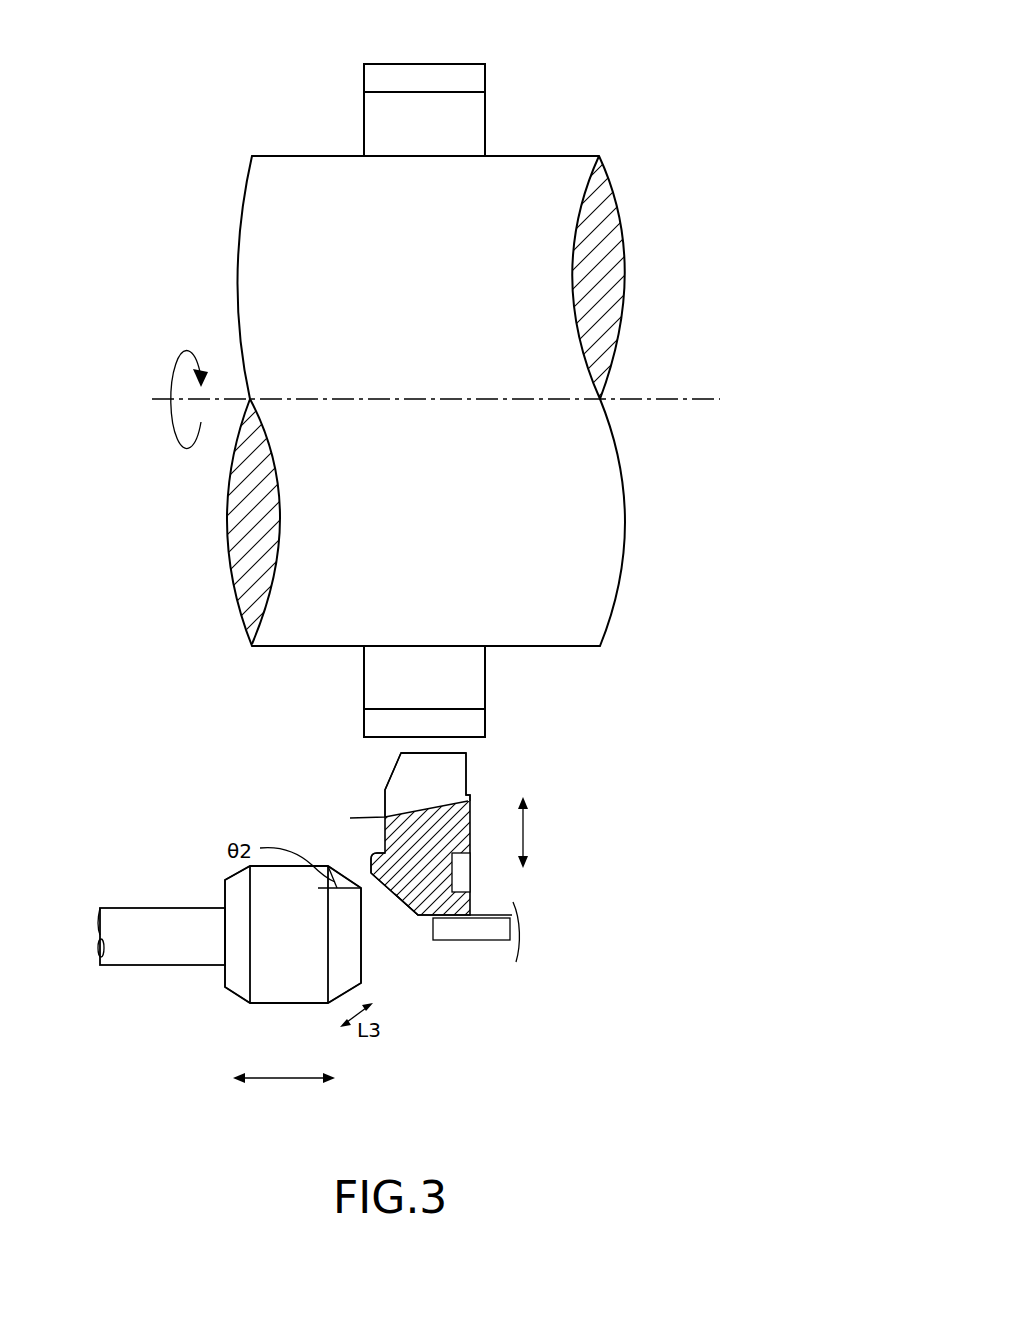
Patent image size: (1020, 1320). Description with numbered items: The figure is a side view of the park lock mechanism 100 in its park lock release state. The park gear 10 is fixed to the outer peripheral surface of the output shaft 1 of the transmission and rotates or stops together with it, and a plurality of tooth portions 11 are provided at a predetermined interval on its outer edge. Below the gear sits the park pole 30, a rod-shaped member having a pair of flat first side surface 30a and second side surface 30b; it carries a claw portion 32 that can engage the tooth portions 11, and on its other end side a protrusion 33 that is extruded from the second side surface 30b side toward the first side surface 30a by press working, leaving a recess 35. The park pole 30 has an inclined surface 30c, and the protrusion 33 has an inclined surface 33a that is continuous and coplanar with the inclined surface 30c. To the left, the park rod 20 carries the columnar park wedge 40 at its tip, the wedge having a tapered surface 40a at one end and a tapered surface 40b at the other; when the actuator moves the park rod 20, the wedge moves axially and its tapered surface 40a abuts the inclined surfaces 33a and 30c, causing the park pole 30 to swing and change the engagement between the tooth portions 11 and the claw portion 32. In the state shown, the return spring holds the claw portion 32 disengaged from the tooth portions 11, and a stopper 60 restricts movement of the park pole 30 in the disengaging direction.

The park lock mechanism 100 is at (624, 104).
The output shaft 1 is at (272, 241).
The tooth portions 11 is at (390, 121).
The park gear 10 is at (490, 697).
The park pole 30 is at (471, 921).
The first side surface 30a is at (385, 793).
The second side surface 30b is at (472, 822).
The inclined surface 30c is at (398, 903).
The claw portion 32 is at (420, 772).
The protrusion 33 is at (373, 865).
The inclined surface 33a is at (377, 893).
The recess 35 is at (465, 866).
The stopper 60 is at (460, 925).
The park rod 20 is at (187, 930).
The park wedge 40 is at (288, 960).
The tapered surface 40a is at (345, 937).
The tapered surface 40b is at (237, 983).